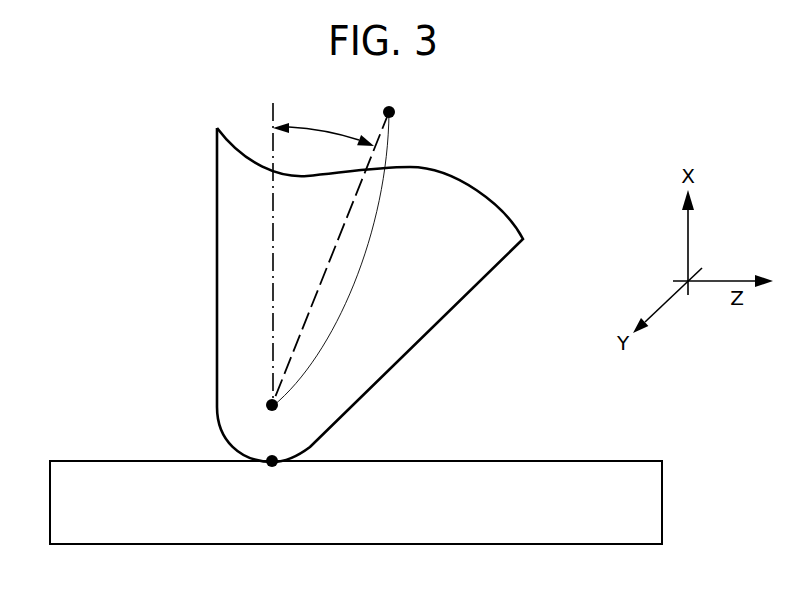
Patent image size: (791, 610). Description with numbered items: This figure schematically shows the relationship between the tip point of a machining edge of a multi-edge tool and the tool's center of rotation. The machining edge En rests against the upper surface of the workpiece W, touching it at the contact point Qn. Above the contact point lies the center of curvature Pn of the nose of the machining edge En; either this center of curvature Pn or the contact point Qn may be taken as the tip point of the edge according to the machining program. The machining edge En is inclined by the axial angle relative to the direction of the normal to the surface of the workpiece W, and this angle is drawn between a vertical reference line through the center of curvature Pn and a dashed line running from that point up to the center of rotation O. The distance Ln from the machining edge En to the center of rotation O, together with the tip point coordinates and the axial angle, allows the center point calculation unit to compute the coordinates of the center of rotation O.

The center of rotation O is at (395, 112).
The center of curvature Pn is at (267, 406).
The contact point Qn is at (272, 458).
The machining edge En is at (200, 413).
The distance from the machining edge to the center of rotation Ln is at (333, 259).
The workpiece W is at (562, 461).